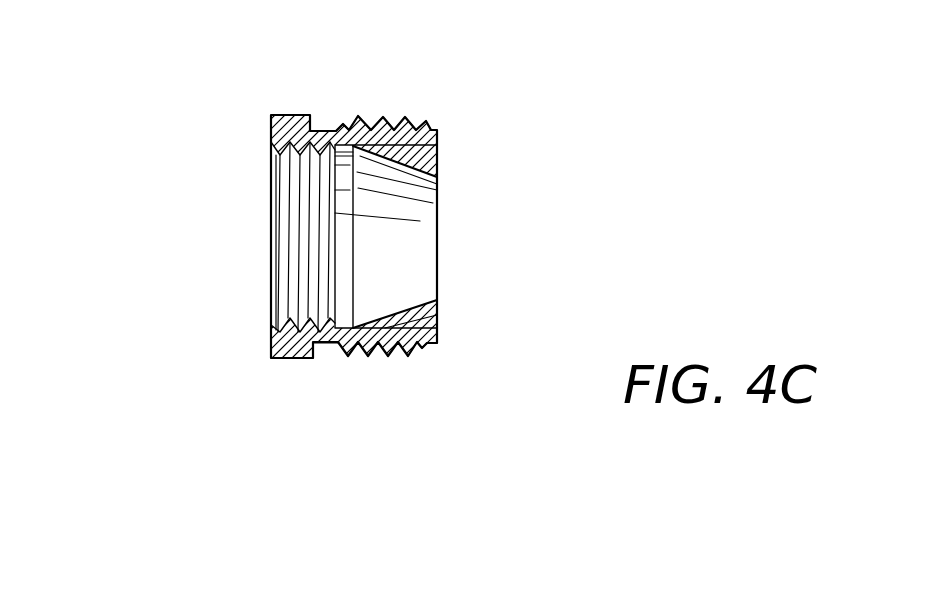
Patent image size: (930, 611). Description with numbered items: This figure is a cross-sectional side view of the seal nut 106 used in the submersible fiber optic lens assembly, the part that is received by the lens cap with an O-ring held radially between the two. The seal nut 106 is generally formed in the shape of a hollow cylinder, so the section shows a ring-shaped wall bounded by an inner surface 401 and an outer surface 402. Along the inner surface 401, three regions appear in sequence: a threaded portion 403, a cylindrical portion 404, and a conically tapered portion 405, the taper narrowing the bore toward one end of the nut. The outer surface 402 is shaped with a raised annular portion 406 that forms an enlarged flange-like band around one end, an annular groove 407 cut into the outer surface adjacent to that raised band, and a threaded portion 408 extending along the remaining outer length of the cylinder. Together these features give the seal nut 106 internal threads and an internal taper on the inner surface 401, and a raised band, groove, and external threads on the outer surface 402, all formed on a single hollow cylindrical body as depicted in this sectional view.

The inner surface 401 is at (381, 153).
The outer surface 402 is at (332, 130).
The threaded portion 403 is at (290, 213).
The cylindrical portion 404 is at (343, 170).
The conically tapered portion 405 is at (403, 183).
The raised annular portion 406 is at (297, 343).
The annular groove 407 is at (328, 340).
The threaded portion 408 is at (406, 352).
The seal nut 106 is at (497, 138).